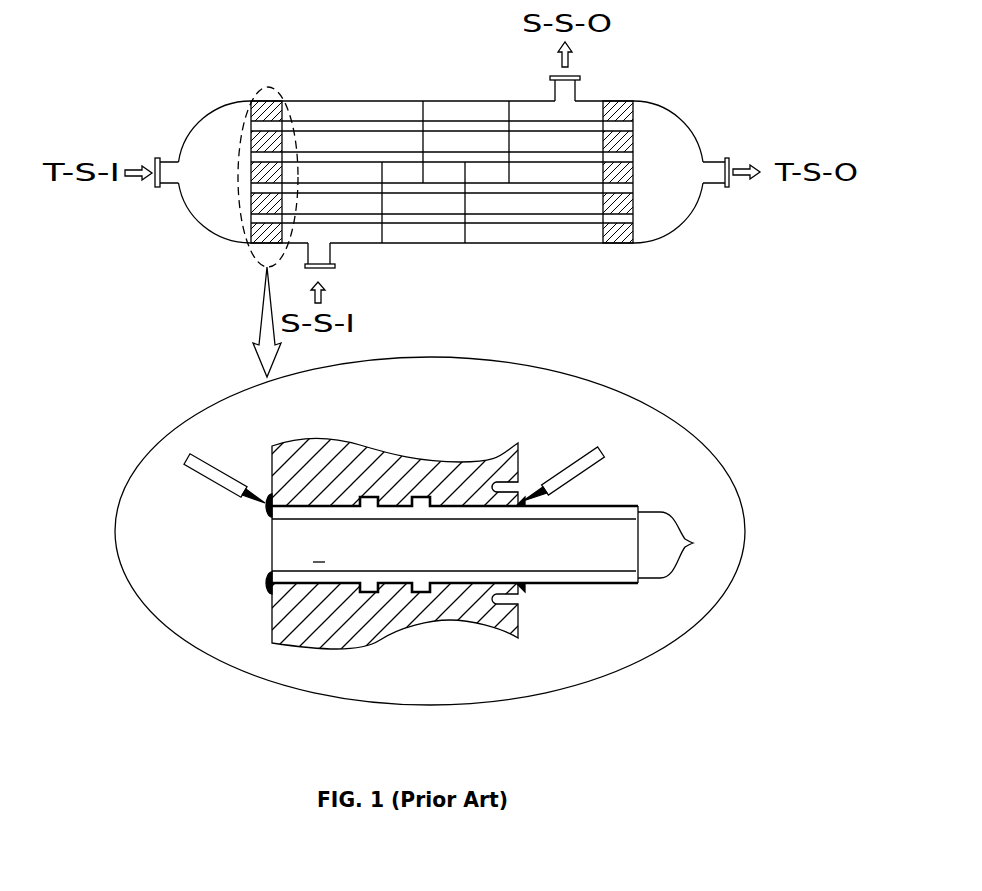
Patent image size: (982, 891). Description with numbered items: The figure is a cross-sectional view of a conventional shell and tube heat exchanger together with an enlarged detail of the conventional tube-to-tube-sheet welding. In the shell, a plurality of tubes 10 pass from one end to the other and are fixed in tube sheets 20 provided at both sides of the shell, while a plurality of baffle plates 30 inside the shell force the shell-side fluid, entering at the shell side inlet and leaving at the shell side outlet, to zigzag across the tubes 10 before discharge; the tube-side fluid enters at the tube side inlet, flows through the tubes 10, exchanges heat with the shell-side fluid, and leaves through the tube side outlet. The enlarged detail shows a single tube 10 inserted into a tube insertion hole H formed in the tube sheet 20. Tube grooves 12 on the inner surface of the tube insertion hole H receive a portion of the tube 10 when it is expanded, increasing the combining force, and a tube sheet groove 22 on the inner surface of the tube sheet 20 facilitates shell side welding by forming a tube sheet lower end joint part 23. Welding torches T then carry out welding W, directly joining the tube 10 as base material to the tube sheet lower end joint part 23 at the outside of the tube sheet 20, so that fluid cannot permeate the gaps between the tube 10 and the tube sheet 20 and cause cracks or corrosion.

The tube 10 is at (332, 128).
The tube sheet 20 is at (267, 112).
The baffle plate 30 is at (382, 233).
The tube groove 12 is at (368, 497).
The tube sheet groove 22 is at (507, 483).
The tube sheet lower end joint part 23 is at (517, 498).
The welding torch T is at (220, 476).
The welding W is at (268, 585).
The tube insertion hole H is at (319, 563).